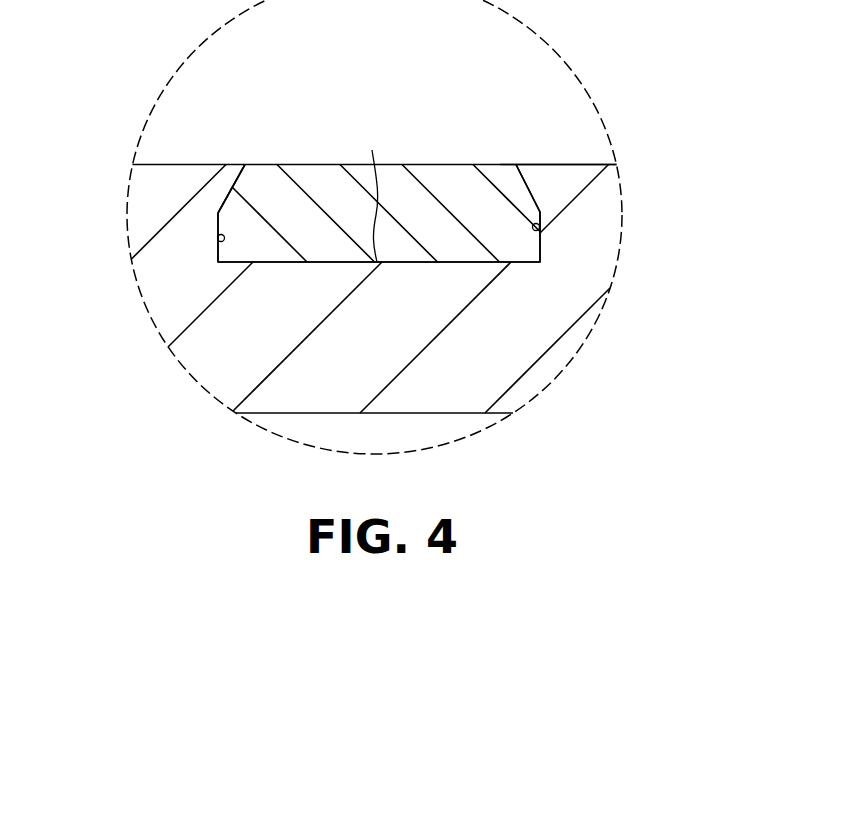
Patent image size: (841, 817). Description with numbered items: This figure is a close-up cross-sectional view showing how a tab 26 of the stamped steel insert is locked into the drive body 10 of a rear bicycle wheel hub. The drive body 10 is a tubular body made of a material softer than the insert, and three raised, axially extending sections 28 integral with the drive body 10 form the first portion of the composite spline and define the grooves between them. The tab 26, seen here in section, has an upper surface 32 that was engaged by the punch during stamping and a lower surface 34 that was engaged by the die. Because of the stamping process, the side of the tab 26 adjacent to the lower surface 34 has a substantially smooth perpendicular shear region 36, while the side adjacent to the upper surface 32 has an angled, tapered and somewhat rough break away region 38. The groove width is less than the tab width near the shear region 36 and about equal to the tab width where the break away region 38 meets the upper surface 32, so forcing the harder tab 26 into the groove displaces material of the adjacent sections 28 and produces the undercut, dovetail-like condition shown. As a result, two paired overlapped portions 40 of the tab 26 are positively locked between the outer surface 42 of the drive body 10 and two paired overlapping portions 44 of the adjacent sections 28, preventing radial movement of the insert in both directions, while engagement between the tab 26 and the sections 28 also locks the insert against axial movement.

The drive body 10 is at (442, 418).
The tab 26 is at (515, 165).
The section 28 is at (152, 190).
The upper surface 32 is at (304, 165).
The lower surface 34 is at (233, 263).
The perpendicular shear region 36 is at (541, 257).
The break away region 38 is at (535, 163).
The overlapped portion 40 is at (219, 236).
The outer surface 42 is at (372, 150).
The overlapping portion 44 is at (222, 183).